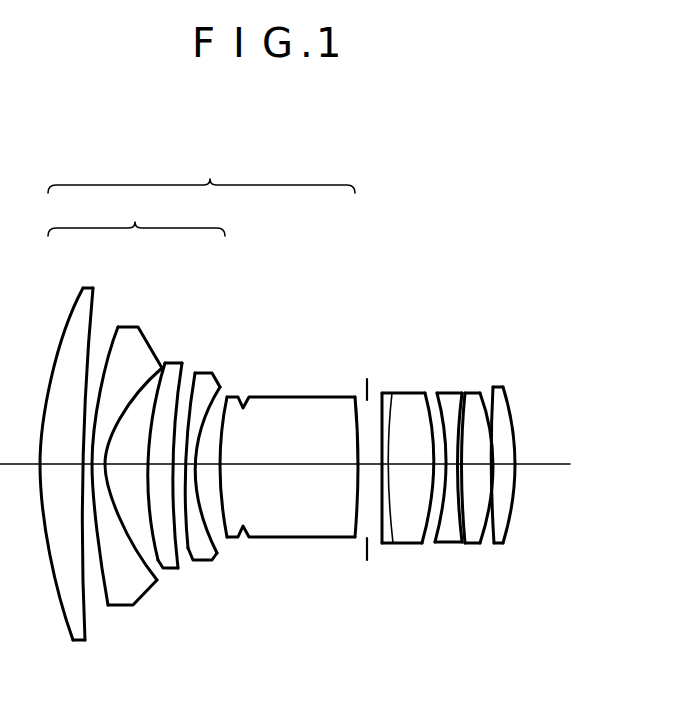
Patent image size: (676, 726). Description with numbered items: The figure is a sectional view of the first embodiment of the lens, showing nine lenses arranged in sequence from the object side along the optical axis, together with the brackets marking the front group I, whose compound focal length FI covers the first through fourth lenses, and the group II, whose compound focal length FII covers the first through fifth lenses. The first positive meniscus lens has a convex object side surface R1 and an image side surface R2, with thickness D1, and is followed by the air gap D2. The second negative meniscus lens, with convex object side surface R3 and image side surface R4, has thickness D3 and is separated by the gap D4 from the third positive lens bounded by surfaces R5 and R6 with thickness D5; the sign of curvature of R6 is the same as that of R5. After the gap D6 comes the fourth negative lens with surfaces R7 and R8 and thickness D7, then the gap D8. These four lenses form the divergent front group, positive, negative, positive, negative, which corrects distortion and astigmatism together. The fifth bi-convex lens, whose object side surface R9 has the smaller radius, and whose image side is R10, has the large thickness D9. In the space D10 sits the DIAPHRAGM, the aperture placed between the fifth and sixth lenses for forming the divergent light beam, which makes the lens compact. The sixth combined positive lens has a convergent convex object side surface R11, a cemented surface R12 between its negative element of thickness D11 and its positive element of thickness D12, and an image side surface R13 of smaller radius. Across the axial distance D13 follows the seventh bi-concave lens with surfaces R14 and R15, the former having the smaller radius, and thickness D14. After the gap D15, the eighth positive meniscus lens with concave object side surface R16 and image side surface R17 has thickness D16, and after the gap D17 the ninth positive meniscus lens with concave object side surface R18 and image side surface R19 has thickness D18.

The first lens group I is at (139, 218).
The second lens group II is at (215, 175).
The aperture DIAPHRAGM is at (368, 379).
The object side surface of the first lens R1 is at (66, 620).
The image side surface of the first lens R2 is at (88, 628).
The object side surface of the second lens R3 is at (107, 598).
The image side surface of the second lens R4 is at (157, 580).
The object side surface of the third lens R5 is at (161, 562).
The image side surface of the third lens R6 is at (180, 568).
The object side surface of the fourth lens R7 is at (188, 548).
The image side surface of the fourth lens R8 is at (218, 556).
The object side surface of the fifth lens R9 is at (227, 538).
The image side surface of the fifth lens R10 is at (356, 538).
The object side surface of the sixth lens R11 is at (382, 545).
The cemented surface of the sixth lens R12 is at (393, 545).
The image side surface of the sixth lens R13 is at (422, 545).
The object side surface of the seventh lens R14 is at (436, 544).
The image side surface of the seventh lens R15 is at (461, 544).
The object side surface of the eighth lens R16 is at (466, 544).
The image side surface of the eighth lens R17 is at (479, 545).
The object side surface of the ninth lens R18 is at (495, 545).
The image side surface of the ninth lens R19 is at (506, 540).
The thickness of the first lens D1 is at (62, 463).
The distance between the first and second lenses D2 is at (88, 463).
The thickness of the second lens D3 is at (100, 463).
The distance between the second and third lenses D4 is at (130, 463).
The thickness of the third lens D5 is at (170, 463).
The distance between the third and fourth lenses D6 is at (180, 463).
The thickness of the fourth lens D7 is at (190, 463).
The distance between the fourth and fifth lenses D8 is at (210, 463).
The thickness of the fifth lens D9 is at (305, 463).
The distance between the fifth and sixth lenses D10 is at (368, 463).
The thickness of the negative element of the sixth lens D11 is at (393, 393).
The thickness of the positive element of the sixth lens D12 is at (408, 463).
The axial distance between the sixth and seventh lenses D13 is at (440, 463).
The thickness of the seventh lens D14 is at (451, 463).
The distance between the seventh and eighth lenses D15 is at (459, 463).
The thickness of the eighth lens D16 is at (477, 463).
The distance between the eighth and ninth lenses D17 is at (493, 440).
The thickness of the ninth lens D18 is at (508, 463).